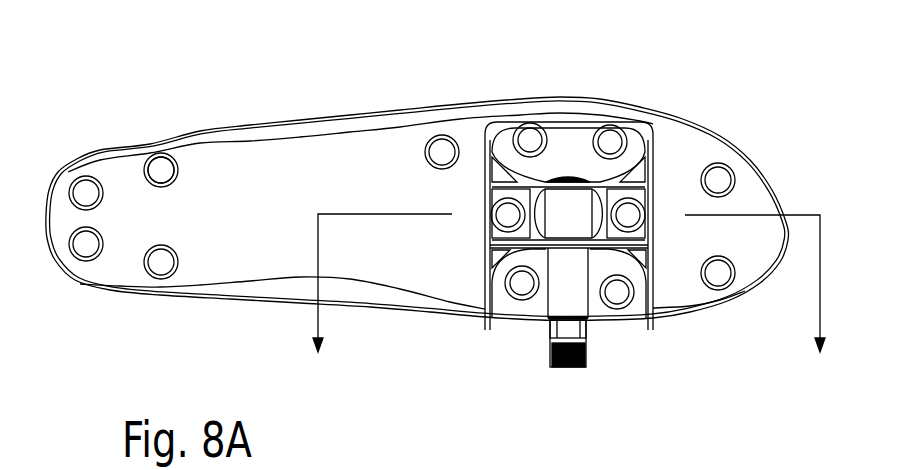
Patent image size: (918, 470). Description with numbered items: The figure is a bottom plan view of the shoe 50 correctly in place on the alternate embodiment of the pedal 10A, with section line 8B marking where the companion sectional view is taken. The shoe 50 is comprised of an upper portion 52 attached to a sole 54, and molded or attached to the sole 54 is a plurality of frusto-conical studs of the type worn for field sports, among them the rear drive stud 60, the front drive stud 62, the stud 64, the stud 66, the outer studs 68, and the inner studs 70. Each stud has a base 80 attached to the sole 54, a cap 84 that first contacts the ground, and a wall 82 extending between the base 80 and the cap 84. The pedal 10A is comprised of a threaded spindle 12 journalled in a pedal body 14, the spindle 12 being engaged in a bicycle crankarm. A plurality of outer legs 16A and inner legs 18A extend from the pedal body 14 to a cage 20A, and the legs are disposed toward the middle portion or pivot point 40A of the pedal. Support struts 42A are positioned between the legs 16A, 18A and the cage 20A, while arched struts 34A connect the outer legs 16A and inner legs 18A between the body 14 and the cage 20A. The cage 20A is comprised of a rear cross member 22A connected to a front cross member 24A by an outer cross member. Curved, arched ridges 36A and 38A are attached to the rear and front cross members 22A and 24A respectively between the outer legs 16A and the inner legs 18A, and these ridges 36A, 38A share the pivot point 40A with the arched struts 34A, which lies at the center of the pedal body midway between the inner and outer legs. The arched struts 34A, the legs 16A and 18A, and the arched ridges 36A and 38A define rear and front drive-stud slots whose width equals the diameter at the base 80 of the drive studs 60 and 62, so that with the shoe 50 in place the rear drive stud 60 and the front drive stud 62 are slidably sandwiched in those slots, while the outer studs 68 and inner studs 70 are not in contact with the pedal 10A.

The shoe 50 is at (322, 110).
The upper portion 52 is at (295, 128).
The sole 54 is at (292, 222).
The stud 64 is at (160, 262).
The base 80 is at (179, 157).
The wall 82 is at (178, 168).
The cap 84 is at (172, 175).
The stud 66 is at (718, 180).
The cage 20A is at (493, 123).
The pivot point 40A is at (562, 185).
The outer studs 68 is at (530, 140).
The arched struts 34A is at (597, 205).
The support struts 42A is at (630, 165).
The outer legs 16A is at (568, 213).
The rear drive stud 60 is at (508, 213).
The rear arched ridge 36A is at (492, 225).
The front drive stud 62 is at (628, 213).
The front arched ridge 38A is at (648, 220).
The rear cross member 22A is at (487, 253).
The front cross member 24A is at (652, 267).
The inner studs 70 is at (522, 283).
The inner legs 18A is at (595, 243).
The pedal body 14 is at (570, 273).
The threaded spindle 12 is at (553, 368).
The pedal 10A is at (538, 335).
The section line 8B is at (571, 305).